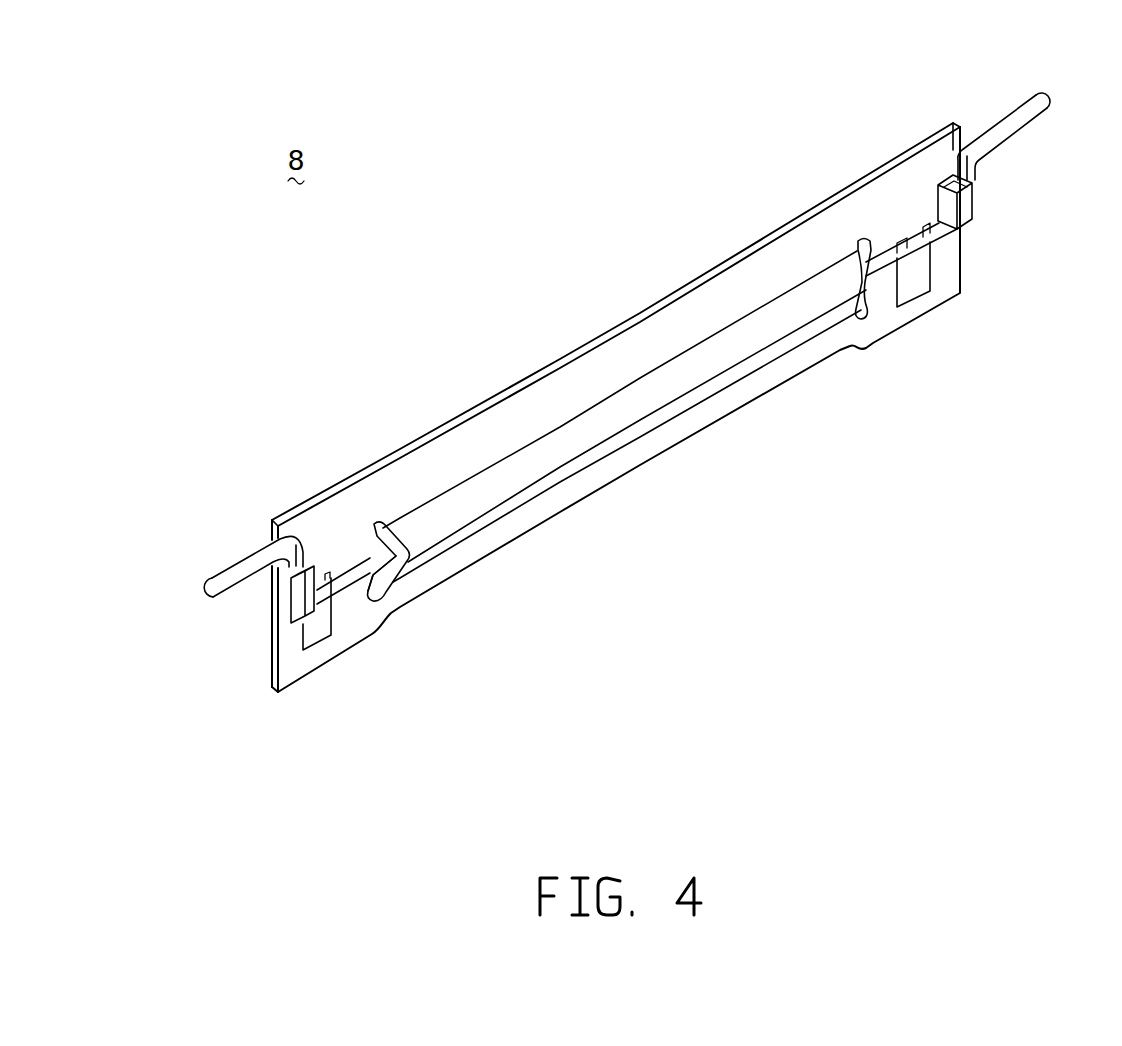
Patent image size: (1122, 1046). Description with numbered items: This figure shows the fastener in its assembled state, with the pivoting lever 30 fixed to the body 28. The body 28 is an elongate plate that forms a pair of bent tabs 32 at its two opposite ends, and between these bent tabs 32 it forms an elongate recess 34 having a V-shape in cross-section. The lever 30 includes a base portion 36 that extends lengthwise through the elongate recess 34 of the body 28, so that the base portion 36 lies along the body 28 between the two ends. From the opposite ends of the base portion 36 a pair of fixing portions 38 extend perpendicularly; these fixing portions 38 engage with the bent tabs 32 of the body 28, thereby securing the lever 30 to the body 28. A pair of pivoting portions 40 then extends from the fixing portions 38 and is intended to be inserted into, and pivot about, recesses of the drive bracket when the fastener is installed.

The body 28 is at (566, 380).
The pivoting lever 30 is at (926, 272).
The bent tabs 32 is at (975, 205).
The elongate recess 34 is at (377, 541).
The base portion 36 is at (377, 566).
The fixing portions 38 is at (978, 172).
The pivoting portions 40 is at (1034, 100).